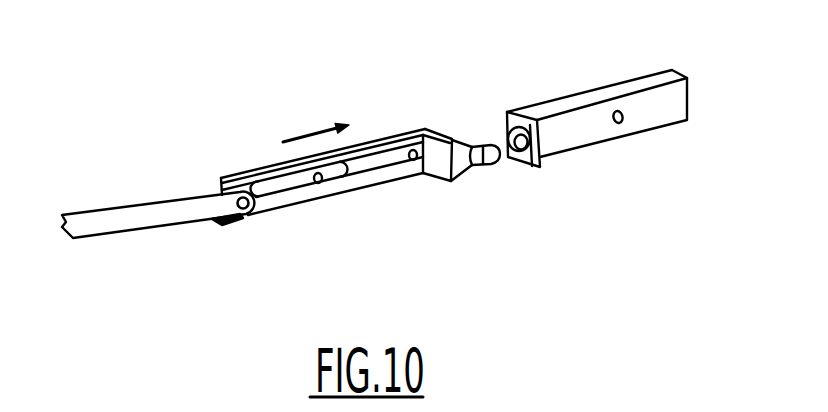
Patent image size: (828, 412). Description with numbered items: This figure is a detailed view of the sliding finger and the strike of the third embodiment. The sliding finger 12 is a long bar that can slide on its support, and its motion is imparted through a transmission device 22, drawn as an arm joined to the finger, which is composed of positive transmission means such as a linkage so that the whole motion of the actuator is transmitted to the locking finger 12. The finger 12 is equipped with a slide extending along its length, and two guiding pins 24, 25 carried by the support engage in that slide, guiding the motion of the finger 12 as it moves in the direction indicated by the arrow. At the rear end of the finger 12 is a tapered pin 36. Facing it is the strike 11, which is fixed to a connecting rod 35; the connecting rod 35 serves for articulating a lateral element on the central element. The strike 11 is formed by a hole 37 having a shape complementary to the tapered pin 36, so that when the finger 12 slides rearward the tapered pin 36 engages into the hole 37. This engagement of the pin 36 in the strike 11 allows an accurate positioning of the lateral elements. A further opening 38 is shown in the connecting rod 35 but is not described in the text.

The strike 11 is at (527, 168).
The sliding finger 12 is at (375, 155).
The transmission device 22 is at (160, 213).
The guiding pin 24 is at (320, 185).
The guiding pin 25 is at (414, 161).
The connecting rod 35 is at (660, 100).
The tapered pin 36 is at (478, 143).
The hole 37 is at (515, 125).
The hole 38 is at (620, 126).